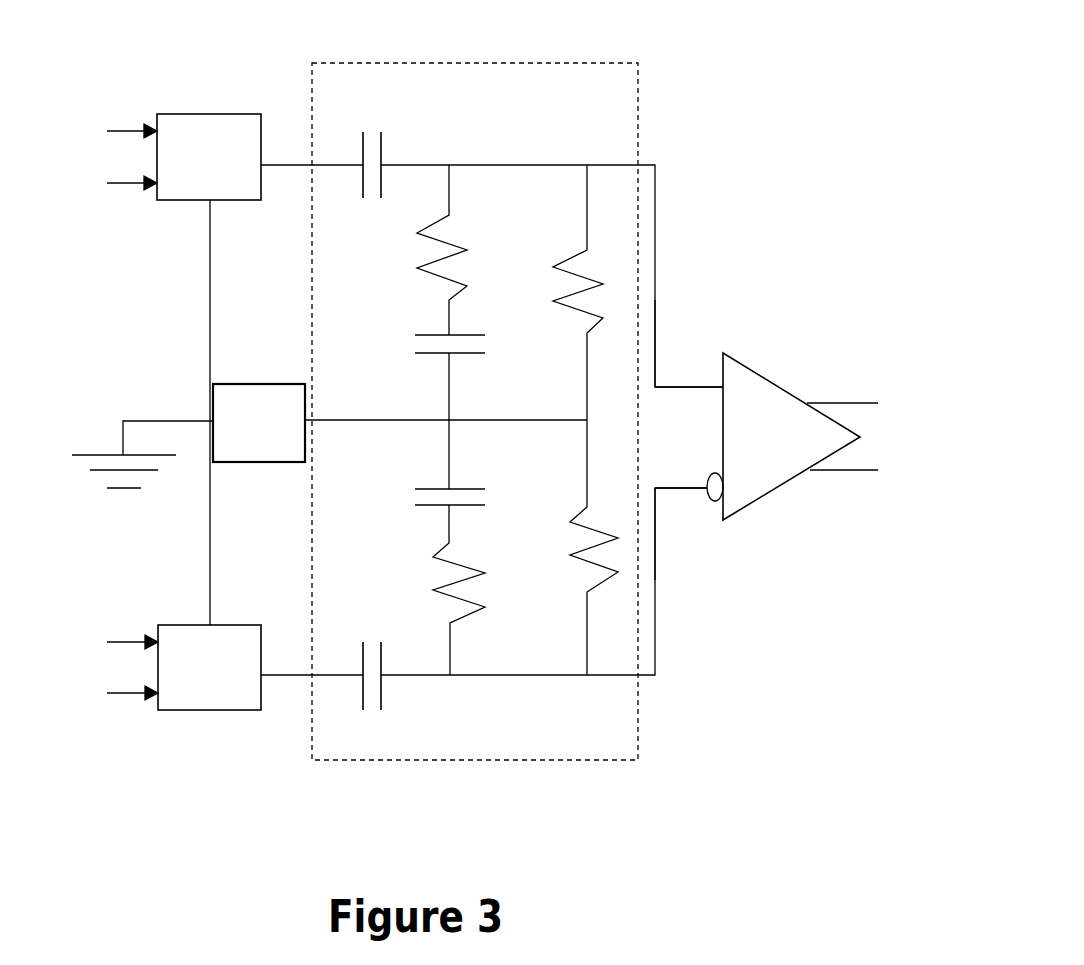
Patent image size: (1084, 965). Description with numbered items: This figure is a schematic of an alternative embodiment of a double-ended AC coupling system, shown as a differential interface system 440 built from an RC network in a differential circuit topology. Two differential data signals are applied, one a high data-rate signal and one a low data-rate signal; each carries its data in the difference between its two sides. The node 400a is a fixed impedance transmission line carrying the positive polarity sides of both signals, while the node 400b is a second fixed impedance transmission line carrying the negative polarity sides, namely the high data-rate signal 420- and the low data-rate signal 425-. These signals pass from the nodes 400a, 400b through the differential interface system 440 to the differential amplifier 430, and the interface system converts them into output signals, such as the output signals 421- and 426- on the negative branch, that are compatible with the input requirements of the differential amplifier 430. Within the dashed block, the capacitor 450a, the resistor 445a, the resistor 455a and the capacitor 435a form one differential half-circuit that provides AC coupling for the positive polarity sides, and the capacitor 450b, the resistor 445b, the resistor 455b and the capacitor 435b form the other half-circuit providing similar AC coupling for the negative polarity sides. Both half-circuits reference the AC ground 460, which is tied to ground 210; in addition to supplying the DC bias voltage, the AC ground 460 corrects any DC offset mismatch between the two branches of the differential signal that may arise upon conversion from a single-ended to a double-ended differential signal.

The differential interface system 440 is at (637, 62).
The node 400a is at (277, 82).
The node 400b is at (243, 712).
The high data-rate differential signal (negative side) 420- is at (125, 640).
The low data-rate differential signal (negative side) 425- is at (125, 697).
The AC ground 460 is at (275, 463).
The ground 210 is at (122, 490).
The capacitor 450a is at (382, 131).
The capacitor 450b is at (382, 713).
The resistor 445a is at (415, 272).
The resistor 445b is at (433, 592).
The capacitor 435a is at (415, 353).
The capacitor 435b is at (415, 505).
The resistor 455a is at (553, 267).
The resistor 455b is at (570, 522).
The differential amplifier 430 is at (760, 367).
The output signal (negative side) 421- is at (670, 485).
The output signal (negative side) 426- is at (692, 490).